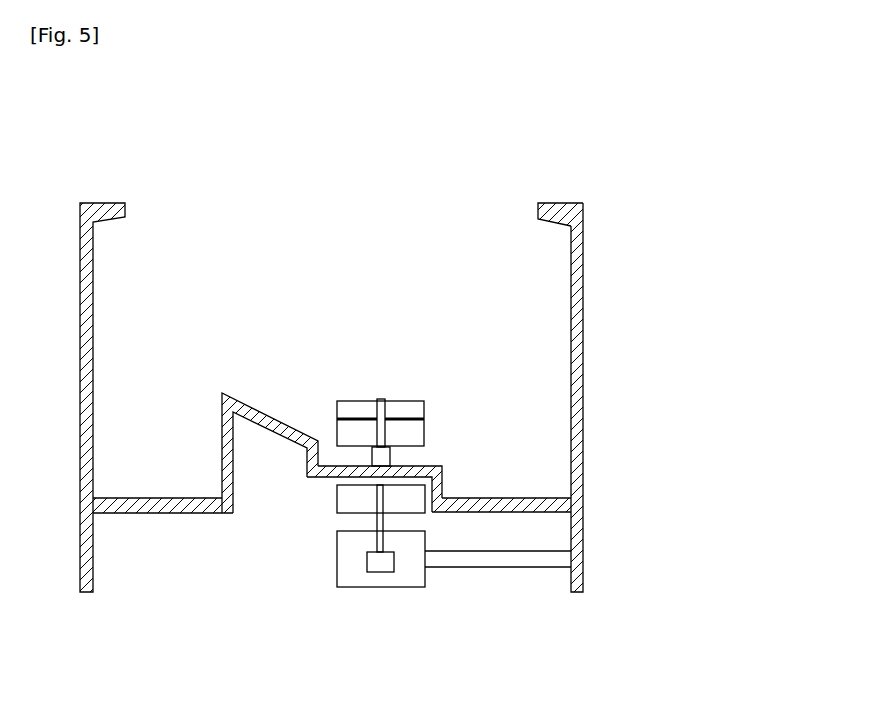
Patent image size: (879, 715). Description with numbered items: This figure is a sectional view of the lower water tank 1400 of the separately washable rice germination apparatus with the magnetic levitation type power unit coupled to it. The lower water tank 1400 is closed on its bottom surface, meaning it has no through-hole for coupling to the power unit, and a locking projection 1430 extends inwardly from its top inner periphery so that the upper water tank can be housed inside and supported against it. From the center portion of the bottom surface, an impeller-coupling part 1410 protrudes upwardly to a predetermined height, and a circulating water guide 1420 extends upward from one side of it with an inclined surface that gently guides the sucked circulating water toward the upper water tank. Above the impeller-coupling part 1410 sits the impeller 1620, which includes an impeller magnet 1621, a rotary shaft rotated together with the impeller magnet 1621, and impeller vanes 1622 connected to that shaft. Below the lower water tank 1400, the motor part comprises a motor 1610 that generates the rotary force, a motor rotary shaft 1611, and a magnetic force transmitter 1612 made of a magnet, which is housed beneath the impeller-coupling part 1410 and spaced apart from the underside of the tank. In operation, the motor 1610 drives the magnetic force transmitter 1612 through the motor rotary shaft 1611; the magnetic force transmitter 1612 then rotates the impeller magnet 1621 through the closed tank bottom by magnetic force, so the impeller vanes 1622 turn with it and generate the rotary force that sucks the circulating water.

The lower water tank 1400 is at (411, 332).
The impeller-coupling part 1410 is at (423, 473).
The circulating water guide 1420 is at (239, 395).
The locking projection 1430 is at (554, 204).
The motor 1610 is at (346, 572).
The motor rotary shaft 1611 is at (378, 522).
The magnetic force transmitter 1612 is at (337, 500).
The impeller 1620 is at (442, 327).
The impeller magnet 1621 is at (412, 430).
The impeller vanes 1622 is at (407, 402).